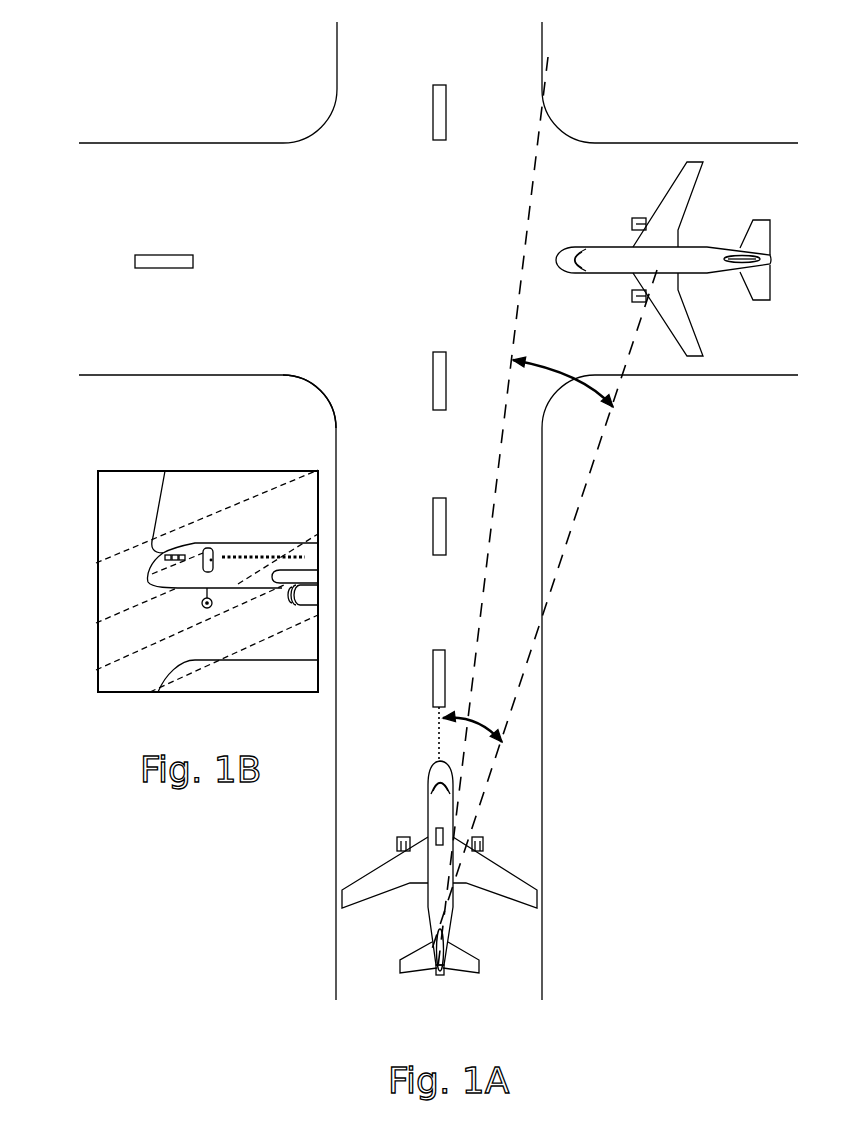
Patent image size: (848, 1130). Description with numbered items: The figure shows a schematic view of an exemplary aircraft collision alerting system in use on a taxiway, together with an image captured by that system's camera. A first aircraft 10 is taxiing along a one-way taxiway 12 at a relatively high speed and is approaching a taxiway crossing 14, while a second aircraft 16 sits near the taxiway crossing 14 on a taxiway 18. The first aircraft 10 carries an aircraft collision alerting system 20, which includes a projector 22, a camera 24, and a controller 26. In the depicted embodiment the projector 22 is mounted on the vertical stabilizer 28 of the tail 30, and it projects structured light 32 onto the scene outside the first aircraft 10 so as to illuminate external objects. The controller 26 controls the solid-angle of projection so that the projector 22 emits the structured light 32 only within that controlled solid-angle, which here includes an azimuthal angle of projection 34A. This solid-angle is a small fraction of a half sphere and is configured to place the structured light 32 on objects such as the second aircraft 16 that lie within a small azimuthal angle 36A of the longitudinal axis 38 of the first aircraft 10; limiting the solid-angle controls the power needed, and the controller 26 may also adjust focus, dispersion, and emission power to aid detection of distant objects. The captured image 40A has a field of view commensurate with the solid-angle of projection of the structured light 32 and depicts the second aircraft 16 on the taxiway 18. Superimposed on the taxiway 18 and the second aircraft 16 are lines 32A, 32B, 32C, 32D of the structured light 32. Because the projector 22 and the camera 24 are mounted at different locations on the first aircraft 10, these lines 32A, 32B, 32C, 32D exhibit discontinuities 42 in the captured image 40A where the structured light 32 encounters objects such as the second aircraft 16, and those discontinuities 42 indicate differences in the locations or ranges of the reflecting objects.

In FIG. 1A, the first aircraft 10 is at (437, 901).
In FIG. 1A, the one-way taxiway 12 is at (421, 612).
In FIG. 1A, the taxiway crossing 14 is at (305, 385).
In FIG. 1A, the second aircraft 16 is at (718, 288).
In FIG. 1B, the second aircraft 16 is at (250, 550).
In FIG. 1A, the taxiway 18 is at (195, 329).
In FIG. 1B, the taxiway 18 is at (165, 656).
In FIG. 1A, the aircraft collision alerting system 20 is at (496, 843).
In FIG. 1A, the projector 22 is at (443, 932).
In FIG. 1A, the camera 24 is at (452, 840).
In FIG. 1A, the controller 26 is at (428, 837).
In FIG. 1A, the vertical stabilizer 28 is at (445, 967).
In FIG. 1A, the tail 30 is at (403, 982).
In FIG. 1A, the structured light 32 is at (562, 450).
In FIG. 1B, the line of structured light 32A is at (278, 635).
In FIG. 1B, the line of structured light 32B is at (95, 670).
In FIG. 1B, the line of structured light 32C is at (95, 625).
In FIG. 1B, the line of structured light 32D is at (95, 563).
In FIG. 1A, the azimuthal angle of projection 34A is at (548, 362).
In FIG. 1A, the small azimuthal angle 36A is at (513, 705).
In FIG. 1A, the longitudinal axis 38 is at (437, 744).
In FIG. 1B, the captured image 40A is at (122, 459).
In FIG. 1B, the discontinuities 42 is at (151, 608).